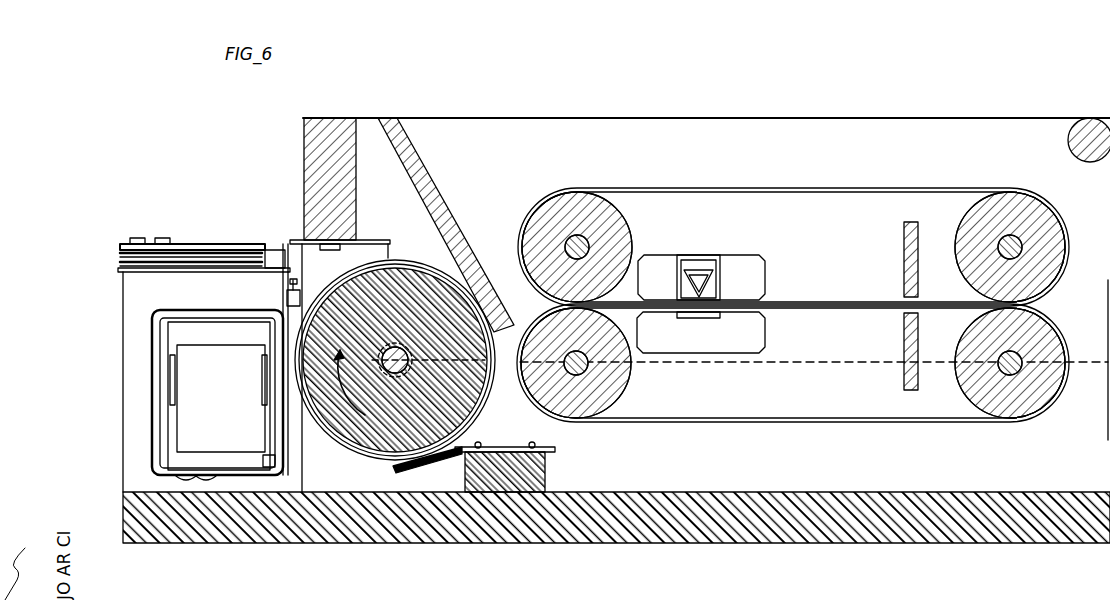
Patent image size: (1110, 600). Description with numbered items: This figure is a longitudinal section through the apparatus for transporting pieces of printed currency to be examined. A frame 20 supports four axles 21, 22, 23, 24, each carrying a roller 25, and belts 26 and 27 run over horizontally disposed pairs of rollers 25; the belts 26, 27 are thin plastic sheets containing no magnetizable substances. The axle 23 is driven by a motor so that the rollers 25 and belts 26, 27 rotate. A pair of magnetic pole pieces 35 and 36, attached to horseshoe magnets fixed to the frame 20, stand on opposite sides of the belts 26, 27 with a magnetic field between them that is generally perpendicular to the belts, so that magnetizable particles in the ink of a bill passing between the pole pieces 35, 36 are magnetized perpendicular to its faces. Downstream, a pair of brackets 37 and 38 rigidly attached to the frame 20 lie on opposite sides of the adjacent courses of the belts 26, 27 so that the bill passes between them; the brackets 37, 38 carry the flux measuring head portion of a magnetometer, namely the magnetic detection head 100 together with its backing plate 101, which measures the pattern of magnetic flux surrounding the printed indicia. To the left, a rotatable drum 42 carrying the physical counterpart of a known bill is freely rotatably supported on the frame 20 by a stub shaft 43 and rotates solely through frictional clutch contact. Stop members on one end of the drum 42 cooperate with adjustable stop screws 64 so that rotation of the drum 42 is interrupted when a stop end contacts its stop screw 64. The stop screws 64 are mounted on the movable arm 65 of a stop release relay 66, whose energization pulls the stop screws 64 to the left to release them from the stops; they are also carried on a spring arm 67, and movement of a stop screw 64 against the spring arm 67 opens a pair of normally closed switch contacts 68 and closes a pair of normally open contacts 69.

The frame 20 is at (680, 128).
The axle 21 is at (1014, 240).
The axle 22 is at (565, 243).
The axle 23 is at (576, 375).
The axle 24 is at (1012, 372).
The roller 25 is at (614, 230).
The belt 26 is at (830, 312).
The belt 27 is at (840, 306).
The magnetic pole piece 35 is at (903, 372).
The magnetic pole piece 36 is at (903, 258).
The bracket 37 is at (706, 352).
The bracket 38 is at (756, 274).
The rotatable drum 42 is at (372, 447).
The stub shaft 43 is at (408, 360).
The adjustable stop screw 64 is at (294, 283).
The movable arm 65 is at (283, 435).
The stop release relay 66 is at (220, 432).
The spring arm 67 is at (275, 312).
The normally closed switch contacts 68 is at (125, 247).
The normally open contacts 69 is at (120, 262).
The magnetic detection head 100 is at (700, 262).
The backing plate 101 is at (700, 318).